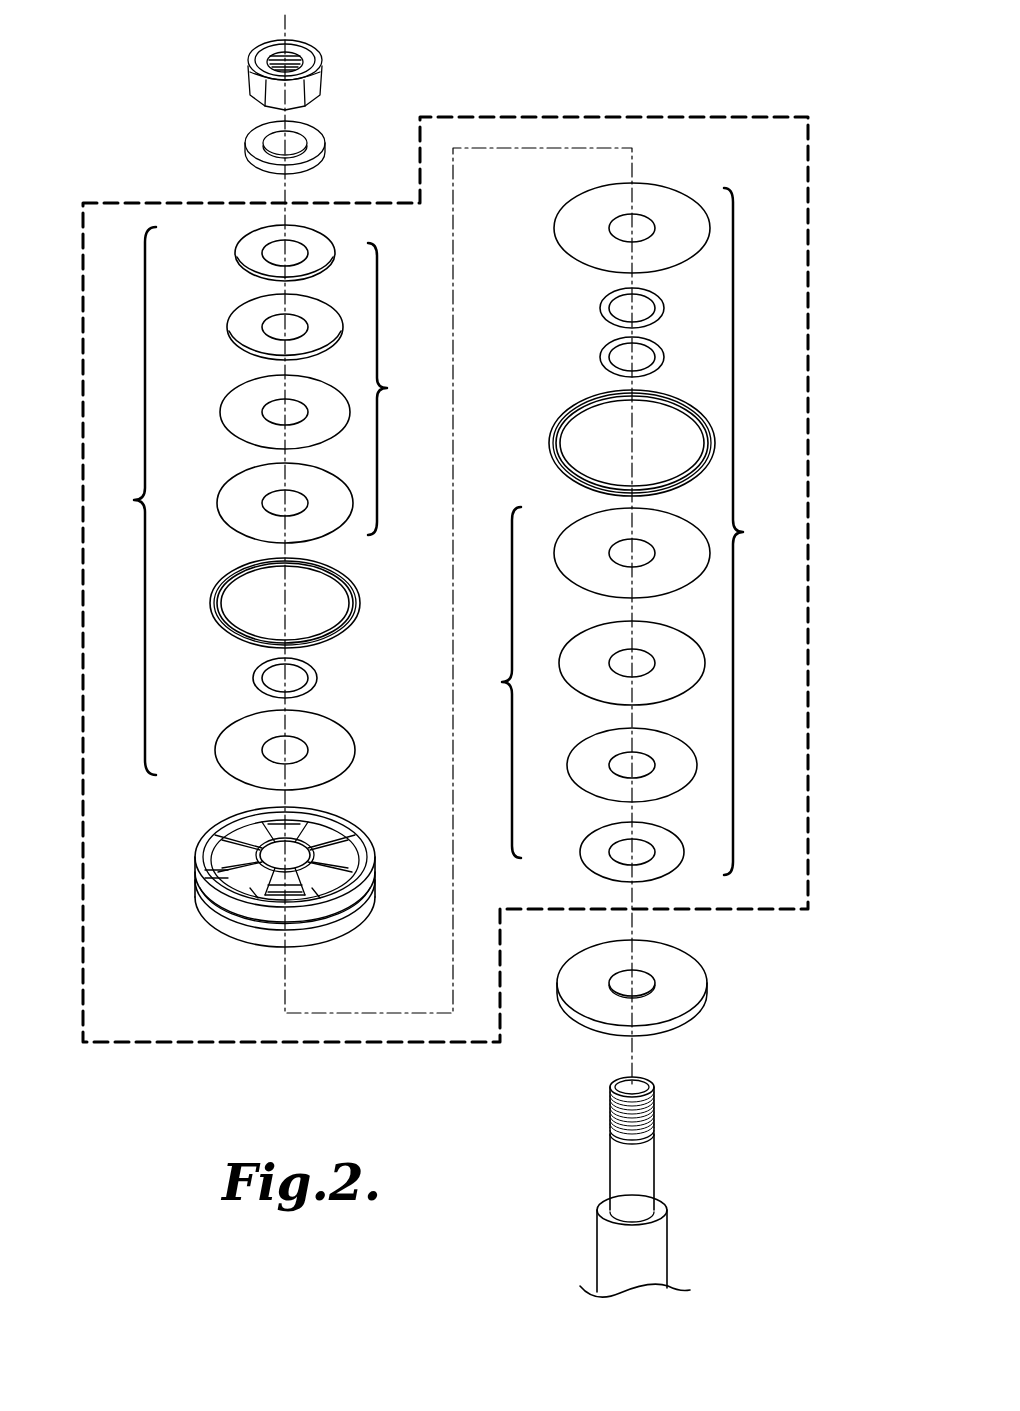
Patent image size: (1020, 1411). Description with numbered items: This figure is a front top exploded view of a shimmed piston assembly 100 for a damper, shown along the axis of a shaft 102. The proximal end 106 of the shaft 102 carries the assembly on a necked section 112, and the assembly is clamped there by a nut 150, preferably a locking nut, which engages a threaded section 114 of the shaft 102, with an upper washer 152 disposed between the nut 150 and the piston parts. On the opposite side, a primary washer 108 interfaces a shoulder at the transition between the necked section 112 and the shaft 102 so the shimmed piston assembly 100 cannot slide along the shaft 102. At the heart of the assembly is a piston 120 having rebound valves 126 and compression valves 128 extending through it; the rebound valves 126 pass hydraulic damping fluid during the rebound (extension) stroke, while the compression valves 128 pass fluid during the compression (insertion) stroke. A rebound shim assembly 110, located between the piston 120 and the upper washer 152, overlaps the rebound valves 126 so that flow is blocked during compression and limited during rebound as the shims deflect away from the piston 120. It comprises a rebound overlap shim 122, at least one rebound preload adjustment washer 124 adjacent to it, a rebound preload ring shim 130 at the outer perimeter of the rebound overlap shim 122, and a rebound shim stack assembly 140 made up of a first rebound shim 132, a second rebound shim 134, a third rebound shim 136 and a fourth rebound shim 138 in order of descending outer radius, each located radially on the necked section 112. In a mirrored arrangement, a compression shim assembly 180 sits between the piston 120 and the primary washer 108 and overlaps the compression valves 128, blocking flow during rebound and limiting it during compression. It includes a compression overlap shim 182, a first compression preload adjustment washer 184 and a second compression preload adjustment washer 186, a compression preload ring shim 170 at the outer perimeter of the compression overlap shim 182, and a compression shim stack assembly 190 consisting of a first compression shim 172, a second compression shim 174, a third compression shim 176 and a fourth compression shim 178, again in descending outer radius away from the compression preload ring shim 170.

The shimmed piston assembly 100 is at (806, 150).
The shaft 102 is at (614, 1182).
The proximal end 106 is at (623, 1086).
The primary washer 108 is at (597, 960).
The rebound shim assembly 110 is at (122, 501).
The necked section 112 is at (614, 1170).
The threaded section 114 is at (619, 1116).
The piston 120 is at (252, 885).
The rebound overlap shim 122 is at (233, 746).
The rebound preload adjustment washer 124 is at (260, 680).
The rebound valves 126 is at (235, 858).
The compression valves 128 is at (234, 893).
The rebound preload ring shim 130 is at (233, 584).
The first rebound shim 132 is at (233, 504).
The second rebound shim 134 is at (233, 418).
The third rebound shim 136 is at (233, 332).
The fourth rebound shim 138 is at (246, 252).
The rebound shim stack assembly 140 is at (403, 389).
The nut 150 is at (302, 54).
The upper washer 152 is at (312, 132).
The compression preload ring shim 170 is at (582, 420).
The first compression shim 172 is at (599, 534).
The second compression shim 174 is at (600, 645).
The third compression shim 176 is at (600, 747).
The fourth compression shim 178 is at (601, 841).
The compression shim assembly 180 is at (763, 531).
The compression overlap shim 182 is at (563, 232).
The first compression preload adjustment washer 184 is at (607, 308).
The second compression preload adjustment washer 186 is at (607, 362).
The compression shim stack assembly 190 is at (490, 682).